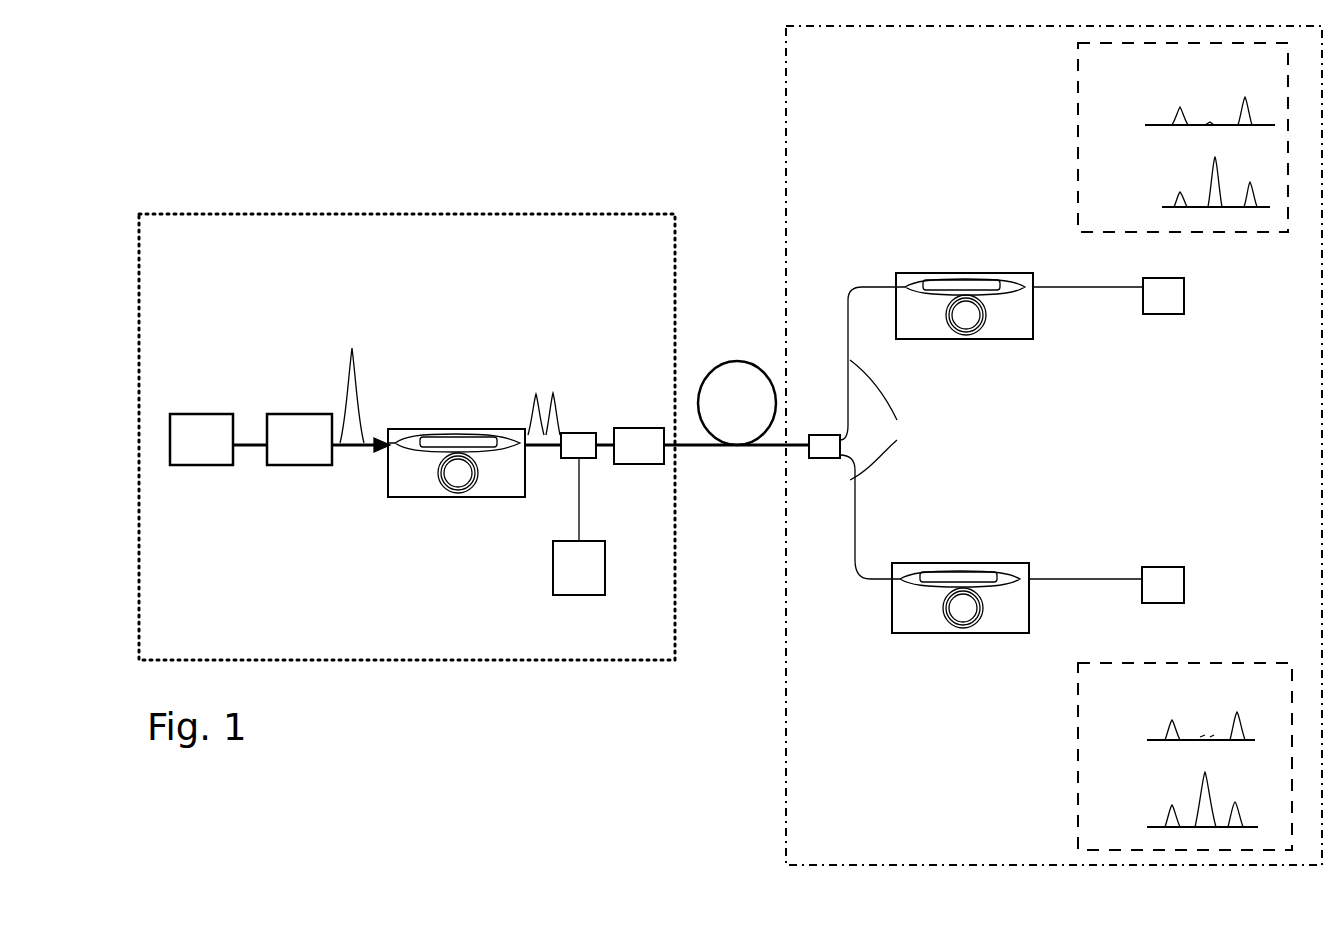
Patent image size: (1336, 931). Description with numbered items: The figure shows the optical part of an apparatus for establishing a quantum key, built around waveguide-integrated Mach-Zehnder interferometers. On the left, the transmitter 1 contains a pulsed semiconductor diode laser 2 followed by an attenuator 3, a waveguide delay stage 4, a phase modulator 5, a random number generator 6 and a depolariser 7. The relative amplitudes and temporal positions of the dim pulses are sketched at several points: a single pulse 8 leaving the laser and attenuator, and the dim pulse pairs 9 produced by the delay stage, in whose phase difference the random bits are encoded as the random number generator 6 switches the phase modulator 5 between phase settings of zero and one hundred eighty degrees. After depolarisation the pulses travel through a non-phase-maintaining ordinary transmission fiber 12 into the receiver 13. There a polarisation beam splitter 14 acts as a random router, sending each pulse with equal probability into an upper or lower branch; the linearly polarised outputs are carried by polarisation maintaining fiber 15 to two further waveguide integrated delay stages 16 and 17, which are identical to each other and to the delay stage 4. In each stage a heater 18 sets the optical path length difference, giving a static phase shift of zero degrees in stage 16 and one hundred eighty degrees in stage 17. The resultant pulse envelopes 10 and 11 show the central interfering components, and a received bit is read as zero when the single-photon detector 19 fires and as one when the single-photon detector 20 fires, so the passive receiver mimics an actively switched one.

The transmitter 1 is at (270, 205).
The pulsed semiconductor diode laser 2 is at (201, 462).
The attenuator 3 is at (296, 462).
The waveguide delay stage 4 is at (490, 505).
The phase modulator 5 is at (580, 440).
The random number generator 6 is at (579, 568).
The depolariser 7 is at (640, 462).
The pulse representation at transmitter input 8 is at (334, 343).
The dim pulse pairs 9 is at (537, 406).
The pulse envelope representation at first detector 10 is at (1100, 280).
The pulse envelope representation at second detector 11 is at (1102, 594).
The transmission fiber 12 is at (762, 362).
The receiver 13 is at (782, 118).
The polarisation beam splitter 14 is at (828, 455).
The polarisation maintaining fiber 15 is at (894, 420).
The waveguide integrated delay stage 16 is at (980, 340).
The waveguide integrated delay stage 17 is at (1035, 598).
The heater 18 is at (480, 432).
The single-photon detector 19 is at (1165, 312).
The single-photon detector 20 is at (1165, 600).